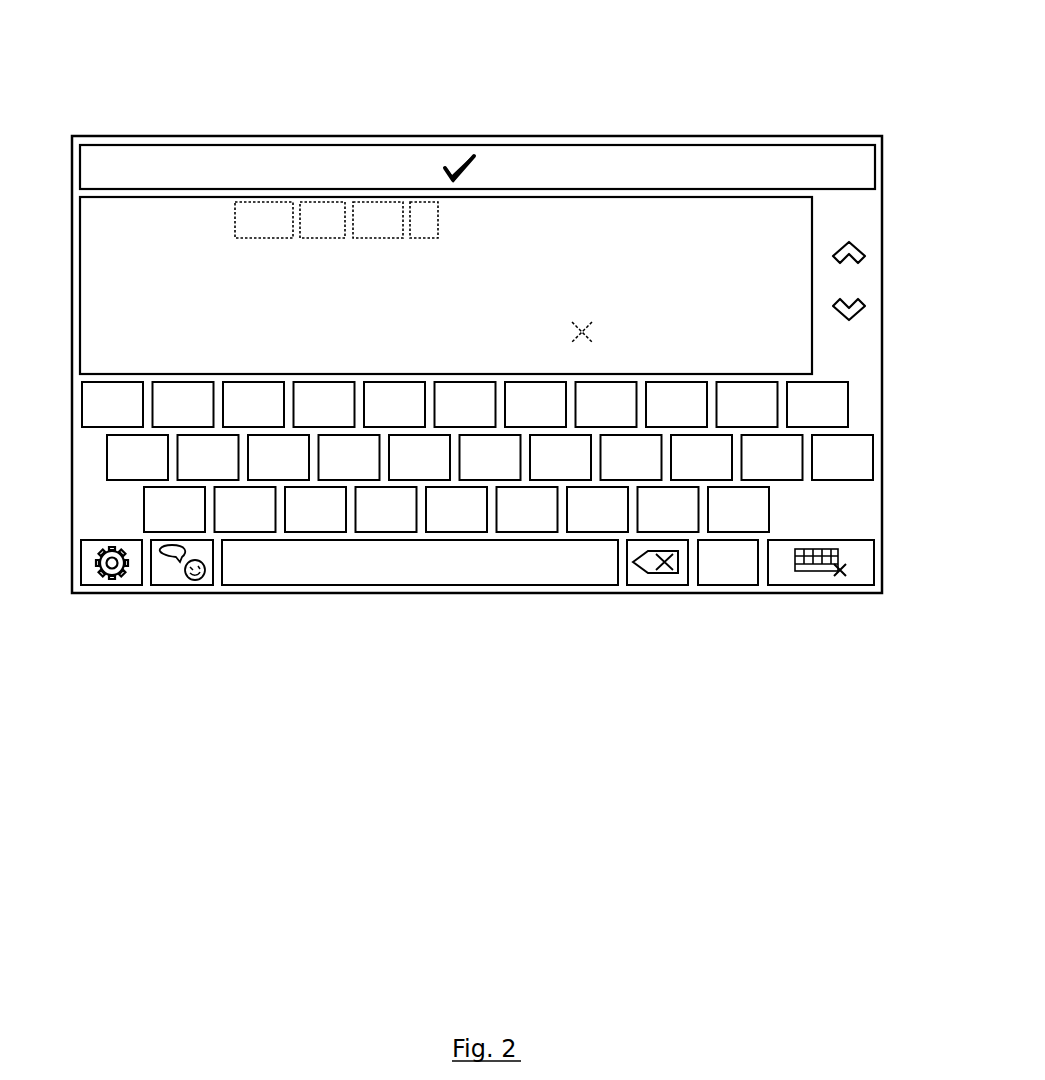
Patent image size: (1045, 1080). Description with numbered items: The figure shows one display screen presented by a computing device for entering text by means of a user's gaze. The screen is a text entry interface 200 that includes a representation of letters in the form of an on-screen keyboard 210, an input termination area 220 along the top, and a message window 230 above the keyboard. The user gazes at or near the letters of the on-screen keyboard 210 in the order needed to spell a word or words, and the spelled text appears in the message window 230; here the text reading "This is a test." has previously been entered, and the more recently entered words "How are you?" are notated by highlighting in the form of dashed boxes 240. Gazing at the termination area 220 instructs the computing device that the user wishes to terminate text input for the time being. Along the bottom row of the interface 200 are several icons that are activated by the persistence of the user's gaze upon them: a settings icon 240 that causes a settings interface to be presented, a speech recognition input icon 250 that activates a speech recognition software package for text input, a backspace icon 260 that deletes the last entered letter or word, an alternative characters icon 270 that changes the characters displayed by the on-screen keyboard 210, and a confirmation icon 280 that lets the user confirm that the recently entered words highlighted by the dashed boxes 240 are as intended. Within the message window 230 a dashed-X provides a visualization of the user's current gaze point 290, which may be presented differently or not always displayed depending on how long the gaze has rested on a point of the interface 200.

The text entry interface 200 is at (108, 82).
The on-screen keyboard 210 is at (298, 557).
The input termination area 220 is at (360, 146).
The message window 230 is at (592, 198).
The settings icon 240 is at (248, 188).
The speech recognition input icon 250 is at (205, 586).
The backspace icon 260 is at (643, 586).
The alternative characters icon 270 is at (738, 586).
The confirmation icon 280 is at (838, 586).
The visualization of the user's current gaze point 290 is at (585, 329).